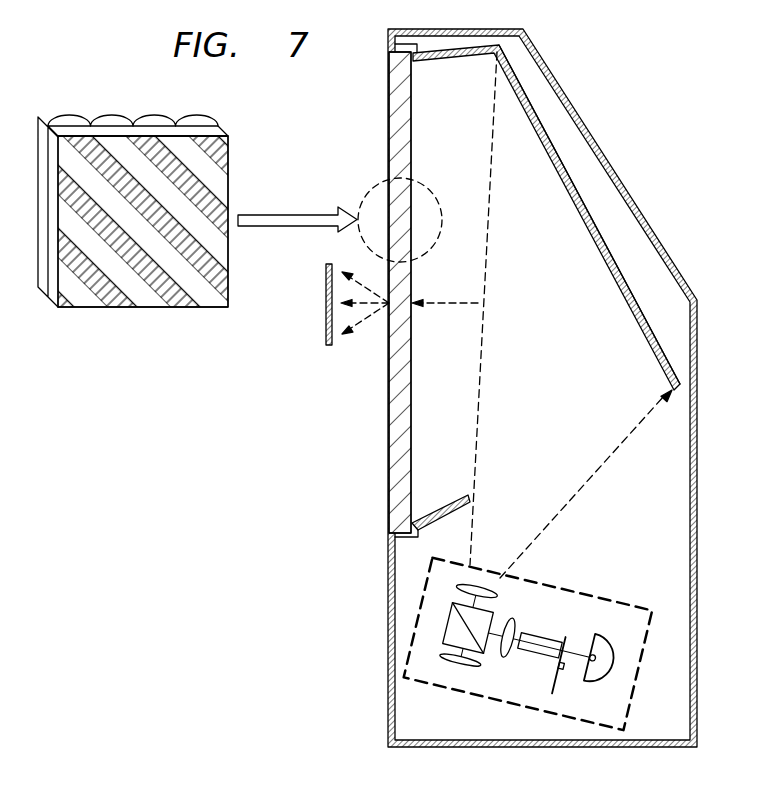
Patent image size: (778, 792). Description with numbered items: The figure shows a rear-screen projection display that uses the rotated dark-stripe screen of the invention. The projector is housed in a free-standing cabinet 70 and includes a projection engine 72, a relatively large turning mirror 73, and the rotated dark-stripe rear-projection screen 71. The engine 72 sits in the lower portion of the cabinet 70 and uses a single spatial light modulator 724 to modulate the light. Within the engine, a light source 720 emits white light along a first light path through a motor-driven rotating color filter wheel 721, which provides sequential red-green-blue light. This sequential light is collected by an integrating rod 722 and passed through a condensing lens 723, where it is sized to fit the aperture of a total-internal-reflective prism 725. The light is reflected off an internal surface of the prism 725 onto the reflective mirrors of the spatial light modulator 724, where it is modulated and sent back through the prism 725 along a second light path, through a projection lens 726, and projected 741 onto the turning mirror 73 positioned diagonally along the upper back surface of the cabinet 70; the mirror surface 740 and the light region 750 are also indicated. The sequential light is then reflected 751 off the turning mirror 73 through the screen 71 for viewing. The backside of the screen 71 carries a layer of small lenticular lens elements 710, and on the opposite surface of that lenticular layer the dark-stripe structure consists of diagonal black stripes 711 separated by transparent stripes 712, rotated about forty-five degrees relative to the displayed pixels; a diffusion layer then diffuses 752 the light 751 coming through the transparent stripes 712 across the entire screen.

The free-standing cabinet 70 is at (698, 462).
The rotated dark-stripe rear-projection screen 71 is at (385, 183).
The projection engine 72 is at (636, 607).
The turning mirror 73 is at (585, 220).
The lenticular lens elements 710 is at (75, 118).
The black stripes 711 is at (229, 158).
The transparent stripes 712 is at (92, 300).
The light source 720 is at (614, 670).
The rotating color filter wheel 721 is at (559, 688).
The integrating rod 722 is at (536, 656).
The condensing lens 723 is at (518, 630).
The spatial light modulator 724 is at (450, 670).
The total-internal-reflective prism 725 is at (447, 623).
The projection lens 726 is at (481, 584).
The reflecting surface 740 is at (671, 362).
The projected light 741 is at (592, 485).
The light path to window 750 is at (472, 105).
The reflected light 751 is at (456, 305).
The diffused light 752 is at (320, 265).